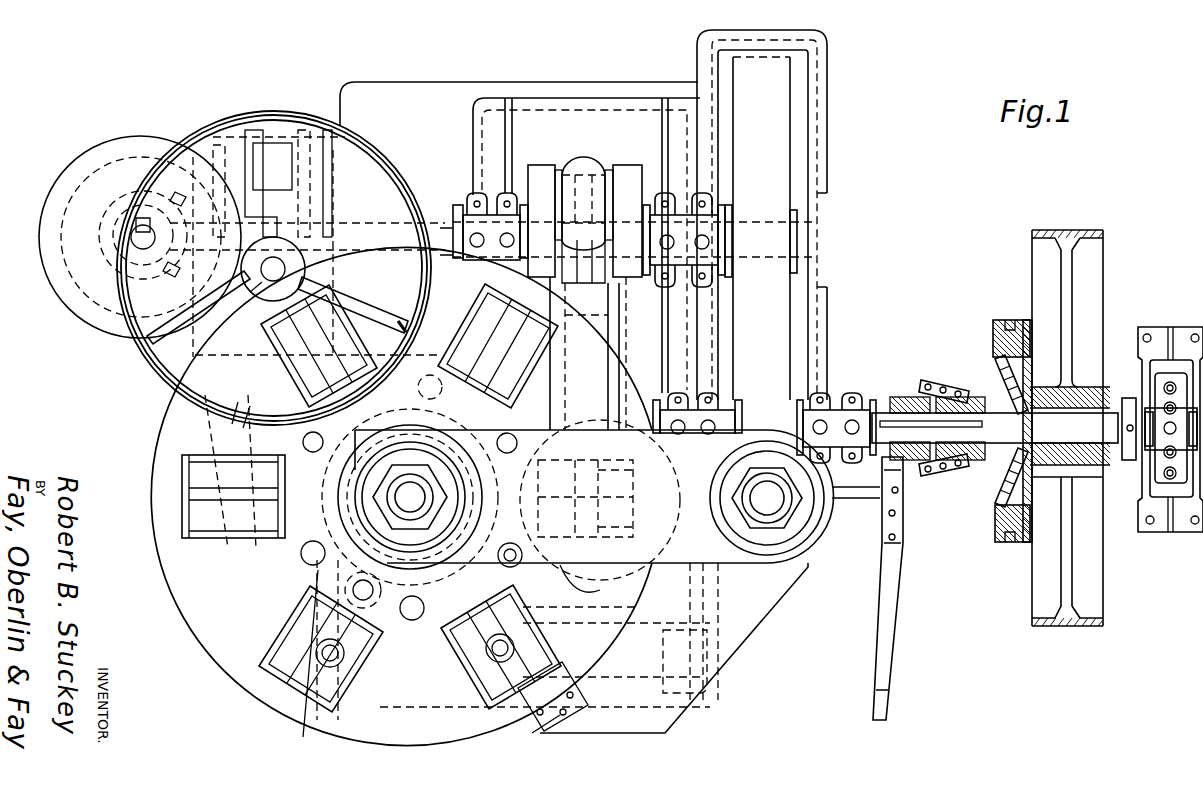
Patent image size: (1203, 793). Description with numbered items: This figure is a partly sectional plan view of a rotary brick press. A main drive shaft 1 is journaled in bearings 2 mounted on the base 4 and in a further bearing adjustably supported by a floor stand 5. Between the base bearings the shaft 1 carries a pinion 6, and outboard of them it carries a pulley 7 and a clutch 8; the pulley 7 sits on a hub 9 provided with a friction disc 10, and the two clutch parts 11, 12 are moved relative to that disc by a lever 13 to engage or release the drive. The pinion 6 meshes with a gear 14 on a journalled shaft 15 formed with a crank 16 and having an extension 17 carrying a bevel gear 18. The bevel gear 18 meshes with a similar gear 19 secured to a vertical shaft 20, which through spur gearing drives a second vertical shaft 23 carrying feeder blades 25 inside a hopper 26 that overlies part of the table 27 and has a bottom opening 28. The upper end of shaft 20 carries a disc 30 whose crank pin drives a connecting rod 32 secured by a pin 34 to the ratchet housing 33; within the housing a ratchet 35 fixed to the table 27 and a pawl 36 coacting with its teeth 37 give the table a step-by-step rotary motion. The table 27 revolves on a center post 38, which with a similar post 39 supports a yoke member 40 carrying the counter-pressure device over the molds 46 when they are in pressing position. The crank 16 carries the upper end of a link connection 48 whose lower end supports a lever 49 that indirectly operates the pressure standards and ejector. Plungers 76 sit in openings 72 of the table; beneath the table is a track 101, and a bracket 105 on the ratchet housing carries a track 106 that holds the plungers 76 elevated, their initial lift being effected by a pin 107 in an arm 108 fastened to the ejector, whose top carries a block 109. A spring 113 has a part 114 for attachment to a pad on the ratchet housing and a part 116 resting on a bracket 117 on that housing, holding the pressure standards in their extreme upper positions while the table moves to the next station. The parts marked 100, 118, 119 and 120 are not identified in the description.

The main drive shaft 1 is at (1085, 430).
The bearings 2 is at (700, 412).
The base 4 is at (718, 625).
The floor stand 5 is at (1170, 441).
The pinion 6 is at (768, 408).
The pulley 7 is at (1090, 262).
The clutch 8 is at (960, 392).
The hub 9 is at (1105, 407).
The friction disc 10 is at (1000, 335).
The clutch part 11 is at (990, 381).
The clutch part 12 is at (1008, 388).
The lever 13 is at (887, 626).
The gear 14 is at (830, 267).
The shaft 15 is at (828, 219).
The crank 16 is at (625, 175).
The extension 17 is at (437, 220).
The bevel gear 18 is at (180, 195).
The gear 19 is at (100, 257).
The vertical shaft 20 is at (143, 226).
The second vertical shaft 23 is at (280, 267).
The feeder blades 25 is at (360, 302).
The hopper 26 is at (262, 112).
The table 27 is at (388, 735).
The bottom opening 28 is at (187, 347).
The disc 30 is at (103, 334).
The connecting rod 32 is at (207, 427).
The ratchet housing 33 is at (353, 588).
The pin 34 is at (353, 677).
The ratchet 35 is at (375, 349).
The pawl 36 is at (347, 590).
The teeth 37 is at (330, 533).
The center post 38 is at (410, 497).
The post 39 is at (767, 498).
The yoke member 40 is at (617, 496).
The molds 46 is at (195, 518).
The link connection 48 is at (580, 258).
The lever 49 is at (617, 322).
The openings 72 is at (301, 442).
The plunger 76 is at (300, 554).
The slide block 100 is at (470, 313).
The track 101 is at (372, 692).
The bracket 105 is at (600, 500).
The track 106 is at (397, 645).
The pin 107 is at (520, 551).
The arm 108 is at (640, 660).
The block 109 is at (545, 711).
The spring 113 is at (580, 640).
The spring part 114 is at (589, 580).
The spring part 116 is at (420, 692).
The bracket 117 is at (458, 692).
The slide block 118 is at (560, 692).
The rod 119 is at (562, 725).
The plate 120 is at (613, 501).